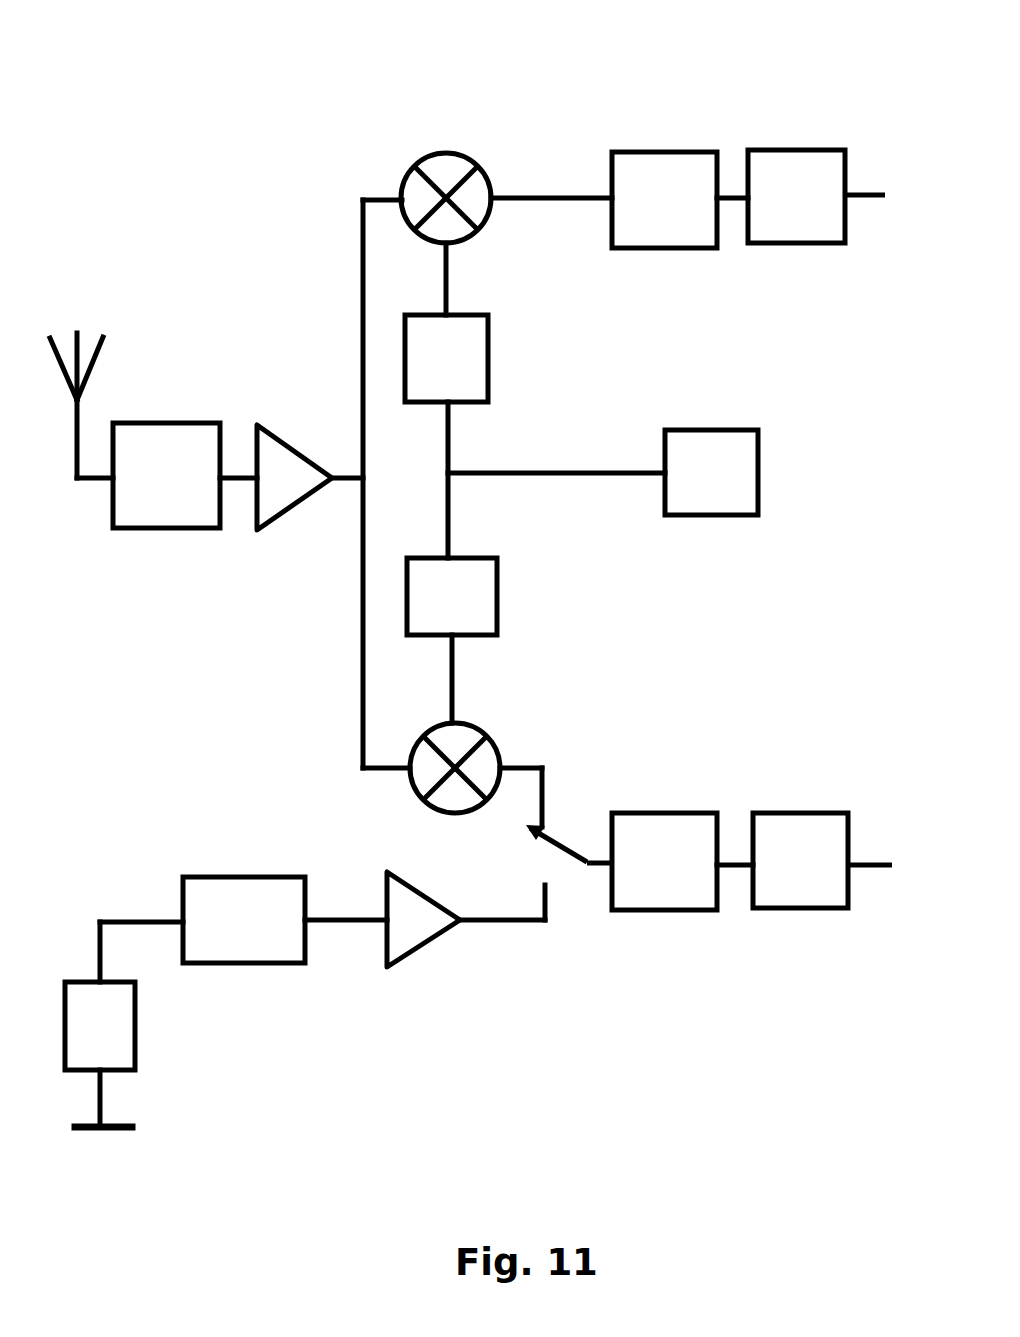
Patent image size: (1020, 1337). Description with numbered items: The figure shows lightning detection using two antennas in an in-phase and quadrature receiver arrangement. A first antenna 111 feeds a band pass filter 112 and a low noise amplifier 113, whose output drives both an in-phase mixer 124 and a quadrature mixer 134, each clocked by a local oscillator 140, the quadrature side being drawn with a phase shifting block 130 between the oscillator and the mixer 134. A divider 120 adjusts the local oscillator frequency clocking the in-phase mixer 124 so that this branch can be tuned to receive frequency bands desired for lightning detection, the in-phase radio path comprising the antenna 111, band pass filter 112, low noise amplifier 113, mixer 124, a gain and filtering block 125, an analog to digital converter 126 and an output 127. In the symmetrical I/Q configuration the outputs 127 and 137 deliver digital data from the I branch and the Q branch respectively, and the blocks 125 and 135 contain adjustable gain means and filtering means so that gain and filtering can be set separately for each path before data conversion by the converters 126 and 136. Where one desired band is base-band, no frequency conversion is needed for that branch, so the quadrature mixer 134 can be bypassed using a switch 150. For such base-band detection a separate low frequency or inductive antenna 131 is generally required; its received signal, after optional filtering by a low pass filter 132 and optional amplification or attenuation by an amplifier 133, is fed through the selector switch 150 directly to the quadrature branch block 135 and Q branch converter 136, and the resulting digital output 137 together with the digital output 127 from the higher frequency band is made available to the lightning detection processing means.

The antenna 111 is at (57, 435).
The band pass filter 112 is at (163, 508).
The low noise amplifier 113 is at (270, 500).
The divider 120 is at (415, 333).
The in-phase mixer 124 is at (447, 173).
The adjustable gain and filtering block 125 is at (662, 148).
The analog to digital converter 126 is at (770, 148).
The digital output 127 is at (858, 190).
The 90 degree phase shifter 130 is at (483, 588).
The low frequency or inductive antenna 131 is at (107, 1035).
The low pass filter 132 is at (267, 948).
The amplifier 133 is at (417, 937).
The quadrature mixer 134 is at (487, 737).
The adjustable gain and filtering block 135 is at (676, 912).
The analog to digital converter 136 is at (805, 887).
The digital output 137 is at (865, 868).
The local oscillator 140 is at (743, 503).
The switch 150 is at (560, 863).